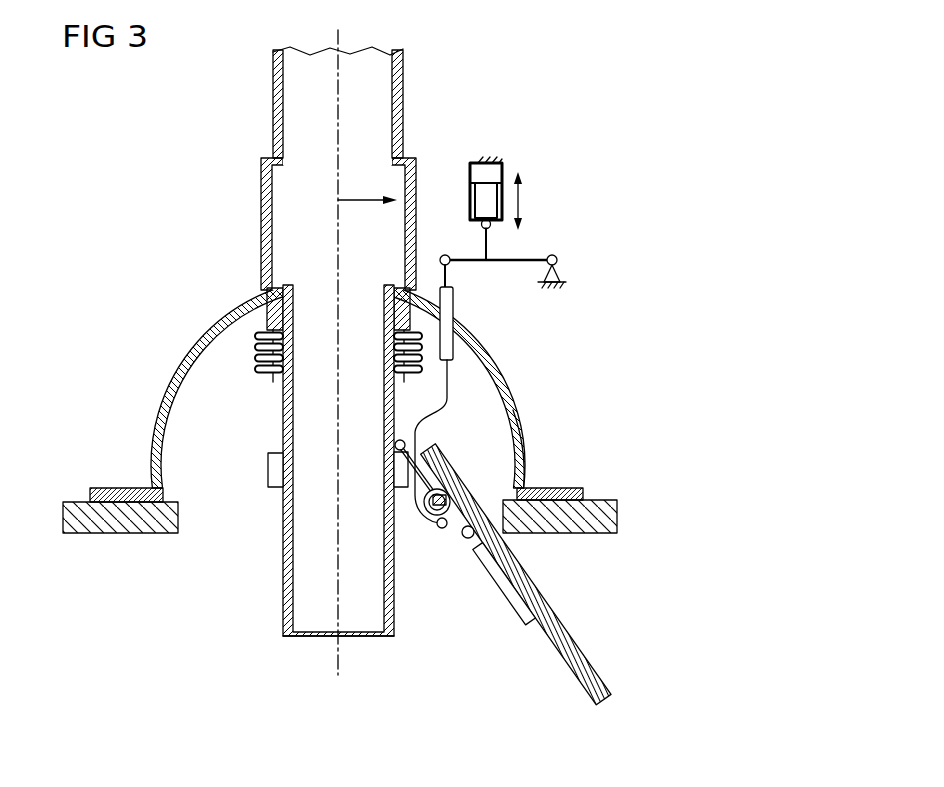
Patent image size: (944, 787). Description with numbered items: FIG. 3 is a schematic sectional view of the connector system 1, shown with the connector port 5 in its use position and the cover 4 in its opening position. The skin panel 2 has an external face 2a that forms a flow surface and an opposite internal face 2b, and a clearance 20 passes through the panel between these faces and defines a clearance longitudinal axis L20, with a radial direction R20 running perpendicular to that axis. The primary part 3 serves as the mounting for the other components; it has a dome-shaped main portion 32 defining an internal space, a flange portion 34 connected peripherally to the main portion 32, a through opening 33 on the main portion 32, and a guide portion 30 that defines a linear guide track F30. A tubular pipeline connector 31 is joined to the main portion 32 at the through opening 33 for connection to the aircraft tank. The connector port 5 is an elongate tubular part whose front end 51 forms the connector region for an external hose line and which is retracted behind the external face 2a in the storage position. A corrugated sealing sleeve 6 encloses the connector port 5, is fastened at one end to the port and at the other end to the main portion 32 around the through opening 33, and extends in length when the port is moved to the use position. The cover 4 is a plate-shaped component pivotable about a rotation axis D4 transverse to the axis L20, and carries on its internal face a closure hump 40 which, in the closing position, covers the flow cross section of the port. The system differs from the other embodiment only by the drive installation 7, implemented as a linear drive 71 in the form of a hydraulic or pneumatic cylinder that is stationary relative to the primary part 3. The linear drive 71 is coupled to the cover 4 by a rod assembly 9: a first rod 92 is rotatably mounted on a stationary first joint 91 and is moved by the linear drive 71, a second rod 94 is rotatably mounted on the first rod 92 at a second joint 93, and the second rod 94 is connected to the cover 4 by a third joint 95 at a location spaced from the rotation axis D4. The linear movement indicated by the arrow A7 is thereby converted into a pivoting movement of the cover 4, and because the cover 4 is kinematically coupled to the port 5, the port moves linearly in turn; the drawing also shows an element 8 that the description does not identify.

The connector system 1 is at (106, 196).
The skin panel 2 is at (549, 528).
The external face 2a is at (571, 537).
The internal face 2b is at (590, 493).
The primary part 3 is at (172, 393).
The cover 4 is at (593, 668).
The connector port 5 is at (283, 577).
The sealing sleeve 6 is at (257, 360).
The drive installation 7 is at (512, 155).
The pivot joint 8 is at (469, 538).
The rod assembly 9 is at (562, 249).
The clearance 20 is at (178, 533).
The guide portion 30 is at (268, 468).
The pipeline connector 31 is at (236, 204).
The main portion 32 is at (514, 410).
The through opening 33 is at (268, 293).
The flange portion 34 is at (112, 488).
The closure hump 40 is at (510, 590).
The front end 51 is at (357, 637).
The linear drive 71 is at (489, 165).
The first joint 91 is at (562, 275).
The first rod 92 is at (526, 263).
The second joint 93 is at (444, 254).
The second rod 94 is at (448, 377).
The third joint 95 is at (440, 526).
The clearance longitudinal axis L20 is at (337, 78).
The linear guide track F30 is at (232, 84).
The radial direction R20 is at (364, 195).
The linear movement arrow A7 is at (522, 200).
The rotation axis D4 is at (447, 497).